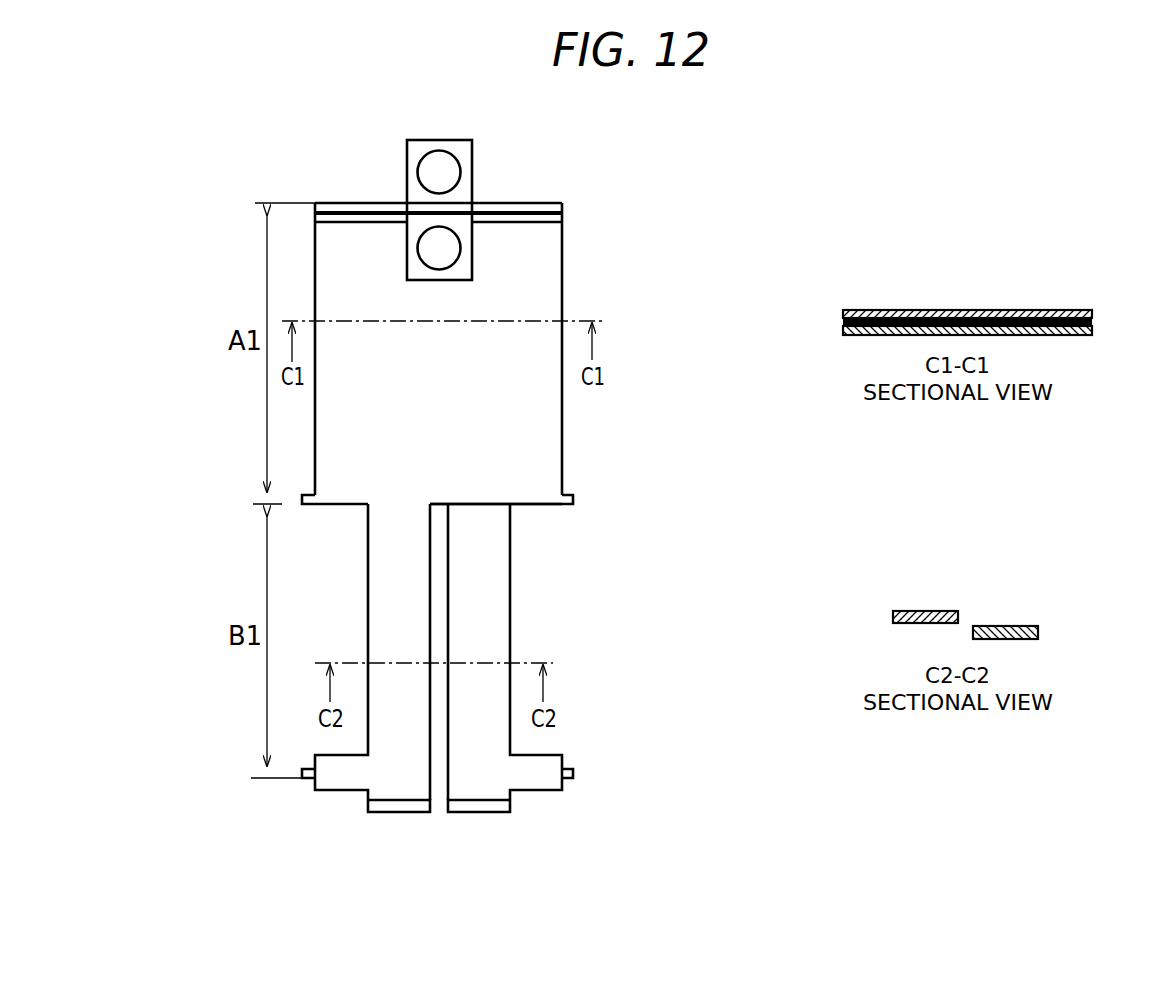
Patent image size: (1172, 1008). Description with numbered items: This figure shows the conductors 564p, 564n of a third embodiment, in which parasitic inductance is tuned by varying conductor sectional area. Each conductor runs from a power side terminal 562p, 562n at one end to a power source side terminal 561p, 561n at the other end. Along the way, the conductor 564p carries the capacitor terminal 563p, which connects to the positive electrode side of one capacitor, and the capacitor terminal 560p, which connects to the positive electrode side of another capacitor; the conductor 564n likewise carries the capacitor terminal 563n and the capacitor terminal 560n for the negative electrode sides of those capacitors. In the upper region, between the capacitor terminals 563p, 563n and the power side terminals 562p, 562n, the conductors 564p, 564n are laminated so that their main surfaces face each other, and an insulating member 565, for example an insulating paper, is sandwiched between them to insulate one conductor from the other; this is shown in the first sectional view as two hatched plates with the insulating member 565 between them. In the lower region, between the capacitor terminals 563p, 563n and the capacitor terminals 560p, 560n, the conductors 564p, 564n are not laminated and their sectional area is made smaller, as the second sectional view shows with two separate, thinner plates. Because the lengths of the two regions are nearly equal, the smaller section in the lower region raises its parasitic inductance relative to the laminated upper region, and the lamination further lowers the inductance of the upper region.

The capacitor terminal 560n is at (310, 778).
The capacitor terminal 560p is at (568, 778).
The power source side terminal 561n is at (397, 813).
The power source side terminal 561p is at (482, 813).
The power side terminal 562n is at (417, 228).
The power side terminal 562p is at (462, 157).
The capacitor terminal 563n is at (308, 497).
The capacitor terminal 563p is at (575, 497).
The conductor 564n is at (385, 603).
The conductor 564p is at (488, 603).
The insulating member 565 is at (563, 215).